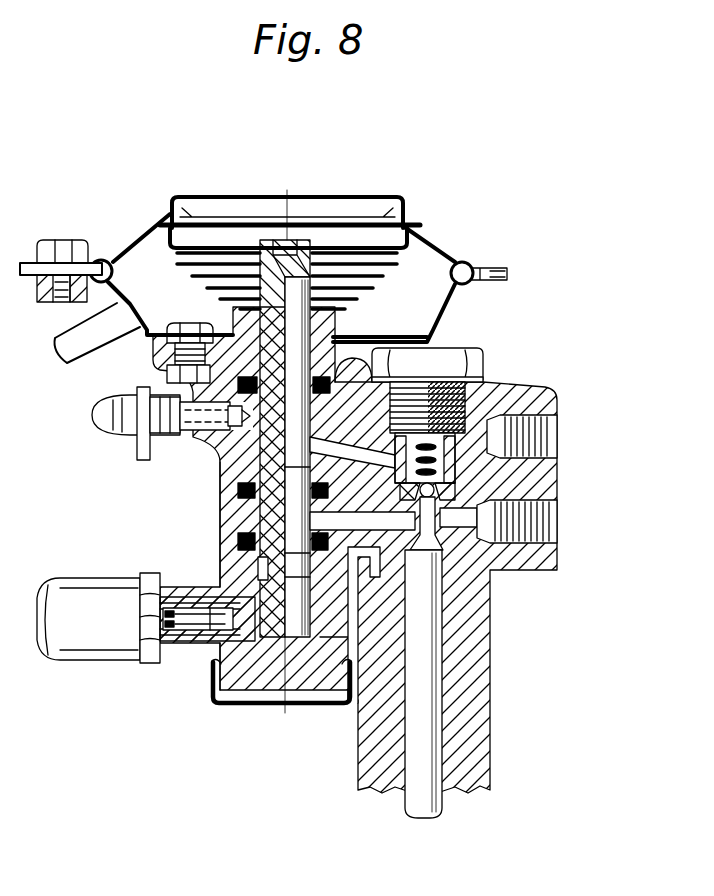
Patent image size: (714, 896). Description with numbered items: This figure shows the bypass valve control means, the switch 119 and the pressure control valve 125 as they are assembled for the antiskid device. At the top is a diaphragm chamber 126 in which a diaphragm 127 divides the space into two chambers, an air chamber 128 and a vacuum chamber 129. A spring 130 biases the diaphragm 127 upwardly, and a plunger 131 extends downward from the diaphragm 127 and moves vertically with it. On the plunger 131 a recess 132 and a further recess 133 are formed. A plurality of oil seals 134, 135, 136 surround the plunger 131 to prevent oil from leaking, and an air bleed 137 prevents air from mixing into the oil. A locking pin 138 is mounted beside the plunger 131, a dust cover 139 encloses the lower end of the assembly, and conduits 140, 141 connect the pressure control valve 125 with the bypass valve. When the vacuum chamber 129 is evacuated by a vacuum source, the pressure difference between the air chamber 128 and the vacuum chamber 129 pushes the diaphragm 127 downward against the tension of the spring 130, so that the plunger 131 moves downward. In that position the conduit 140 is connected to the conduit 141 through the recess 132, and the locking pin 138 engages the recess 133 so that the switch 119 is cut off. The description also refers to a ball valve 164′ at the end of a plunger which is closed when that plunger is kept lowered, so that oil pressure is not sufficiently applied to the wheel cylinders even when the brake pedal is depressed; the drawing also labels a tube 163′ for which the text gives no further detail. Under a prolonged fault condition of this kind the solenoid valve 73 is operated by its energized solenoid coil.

The solenoid valve 73 is at (380, 198).
The air chamber 128 is at (392, 237).
The diaphragm chamber 126 is at (430, 227).
The diaphragm 127 is at (460, 261).
The vacuum chamber 129 is at (427, 315).
The spring 130 is at (378, 284).
The plunger 131 is at (205, 279).
The oil seal 134 is at (223, 370).
The air bleed 137 is at (92, 413).
The recess 132 is at (313, 433).
The oil seal 135 is at (240, 491).
The oil seal 136 is at (243, 538).
The recess 133 is at (263, 567).
The switch 119 is at (83, 575).
The locking pin 138 is at (193, 640).
The dust cover 139 is at (298, 703).
The conduit 140 is at (490, 383).
The pressure control valve 125 is at (497, 387).
The ball valve 164′ is at (525, 465).
The conduit 141 is at (373, 518).
The outlet tube 163′ is at (428, 678).